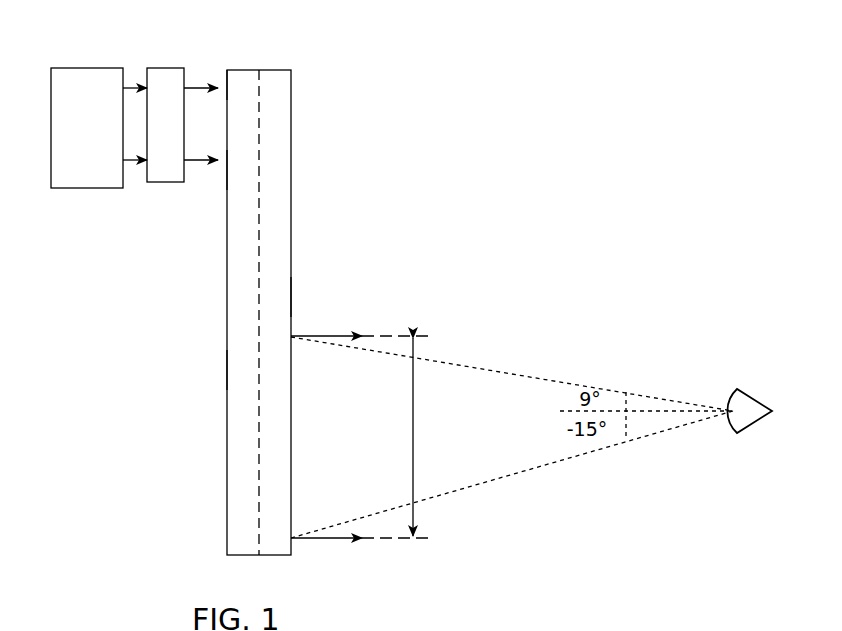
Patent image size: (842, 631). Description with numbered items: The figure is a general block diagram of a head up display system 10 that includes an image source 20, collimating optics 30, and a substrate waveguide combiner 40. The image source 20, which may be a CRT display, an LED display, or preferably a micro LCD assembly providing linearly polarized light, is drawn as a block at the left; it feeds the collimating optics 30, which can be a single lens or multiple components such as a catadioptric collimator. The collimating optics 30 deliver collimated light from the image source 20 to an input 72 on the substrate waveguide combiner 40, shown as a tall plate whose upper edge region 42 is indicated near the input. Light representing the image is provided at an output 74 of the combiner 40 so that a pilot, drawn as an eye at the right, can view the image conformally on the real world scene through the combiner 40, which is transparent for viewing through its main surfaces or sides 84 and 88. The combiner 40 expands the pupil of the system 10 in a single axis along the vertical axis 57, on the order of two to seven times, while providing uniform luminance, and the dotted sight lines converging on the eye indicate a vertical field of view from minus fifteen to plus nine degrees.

The HUD system 10 is at (248, 50).
The image source 20 is at (78, 173).
The collimating optics 30 is at (163, 173).
The substrate waveguide combiner 40 is at (312, 97).
The panel edge 42 is at (227, 83).
The vertical axis 57 is at (413, 413).
The input 72 is at (221, 178).
The output 74 is at (300, 498).
The main surface 84 is at (227, 370).
The main surface 88 is at (291, 297).